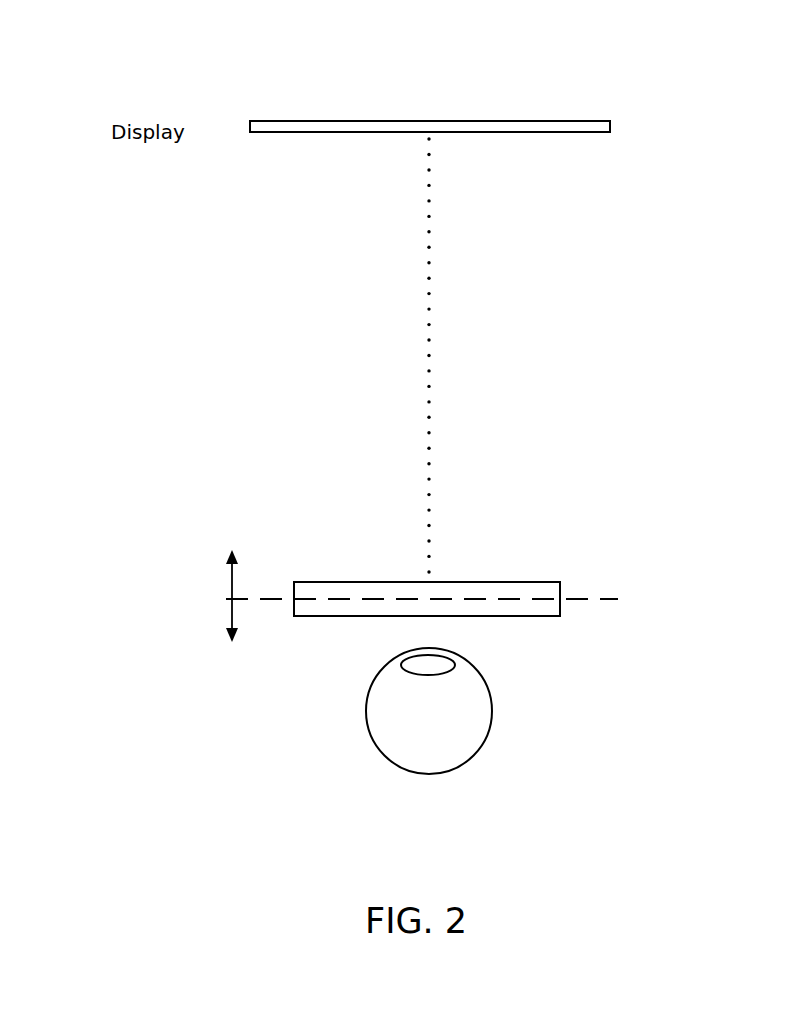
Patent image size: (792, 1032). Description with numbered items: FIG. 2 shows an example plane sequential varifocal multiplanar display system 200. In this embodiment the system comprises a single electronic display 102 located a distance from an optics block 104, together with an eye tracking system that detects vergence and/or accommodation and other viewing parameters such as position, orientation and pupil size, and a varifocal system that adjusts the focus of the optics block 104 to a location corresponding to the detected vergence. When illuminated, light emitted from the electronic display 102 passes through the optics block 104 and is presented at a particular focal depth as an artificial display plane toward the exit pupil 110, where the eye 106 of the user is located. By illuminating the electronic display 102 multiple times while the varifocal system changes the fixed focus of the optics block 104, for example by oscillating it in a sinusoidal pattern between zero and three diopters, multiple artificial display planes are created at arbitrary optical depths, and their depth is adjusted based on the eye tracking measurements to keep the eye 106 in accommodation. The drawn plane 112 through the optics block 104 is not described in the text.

The multiplanar display system 200 is at (152, 66).
The electronic display 102 is at (610, 126).
The optics block 104 is at (549, 617).
The eye 106 is at (365, 731).
The exit pupil 110 is at (486, 654).
The lens plane / optical axis line 112 is at (618, 598).